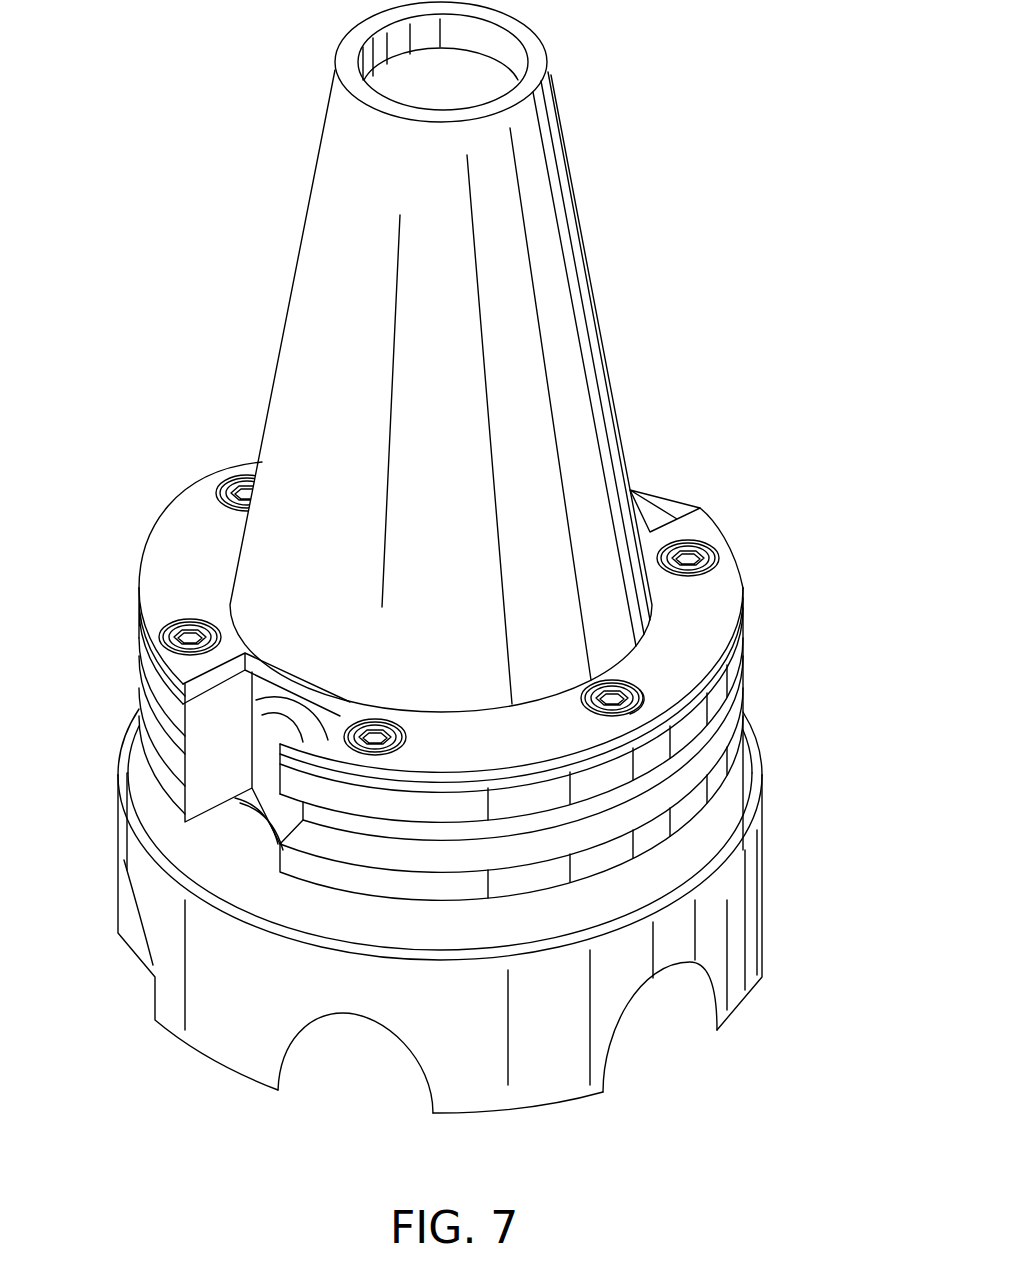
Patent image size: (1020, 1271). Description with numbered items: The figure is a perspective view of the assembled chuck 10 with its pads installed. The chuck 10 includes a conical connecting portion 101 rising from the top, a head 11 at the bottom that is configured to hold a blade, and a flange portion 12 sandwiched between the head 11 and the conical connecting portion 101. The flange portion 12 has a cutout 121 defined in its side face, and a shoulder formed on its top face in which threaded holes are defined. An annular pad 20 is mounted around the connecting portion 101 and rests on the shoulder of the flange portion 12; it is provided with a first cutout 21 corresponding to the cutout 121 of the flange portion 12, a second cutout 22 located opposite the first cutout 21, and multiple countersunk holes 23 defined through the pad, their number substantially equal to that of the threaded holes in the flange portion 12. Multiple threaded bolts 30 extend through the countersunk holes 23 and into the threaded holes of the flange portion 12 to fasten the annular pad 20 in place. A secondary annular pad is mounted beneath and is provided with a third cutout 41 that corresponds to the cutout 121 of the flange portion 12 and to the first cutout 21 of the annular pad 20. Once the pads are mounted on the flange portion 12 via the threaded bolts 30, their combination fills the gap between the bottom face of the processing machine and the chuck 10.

The chuck 10 is at (663, 224).
The conical connecting portion 101 is at (545, 183).
The annular pad 20 is at (765, 518).
The first cutout 21 is at (190, 654).
The second cutout 22 is at (683, 512).
The countersunk holes 23 is at (632, 682).
The threaded bolts 30 is at (707, 570).
The flange portion 12 is at (780, 718).
The third cutout 41 is at (190, 733).
The cutout 121 is at (190, 798).
The head 11 is at (789, 906).